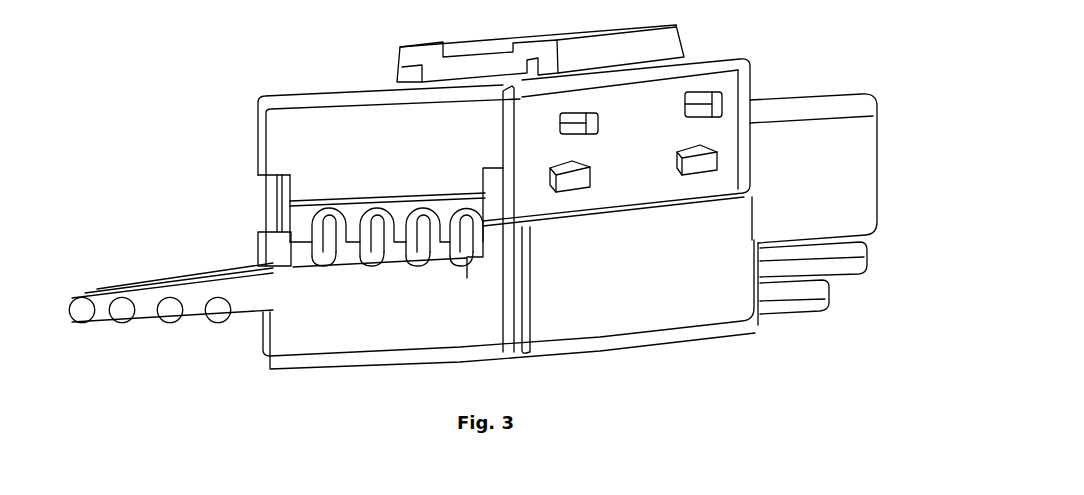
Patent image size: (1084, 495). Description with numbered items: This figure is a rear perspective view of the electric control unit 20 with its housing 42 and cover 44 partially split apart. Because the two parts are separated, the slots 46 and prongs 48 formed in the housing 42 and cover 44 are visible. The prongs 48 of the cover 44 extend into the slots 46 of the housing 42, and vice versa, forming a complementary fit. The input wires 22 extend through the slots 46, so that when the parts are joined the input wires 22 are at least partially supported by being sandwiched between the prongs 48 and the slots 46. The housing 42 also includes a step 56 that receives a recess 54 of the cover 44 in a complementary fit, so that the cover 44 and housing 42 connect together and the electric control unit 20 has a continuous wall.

The electric control unit 20 is at (133, 78).
The input wires 22 is at (160, 352).
The housing 42 is at (523, 252).
The cover 44 is at (290, 132).
The slots 46 is at (382, 250).
The prongs 48 is at (470, 207).
The recess 54 is at (453, 182).
The step 56 is at (470, 207).